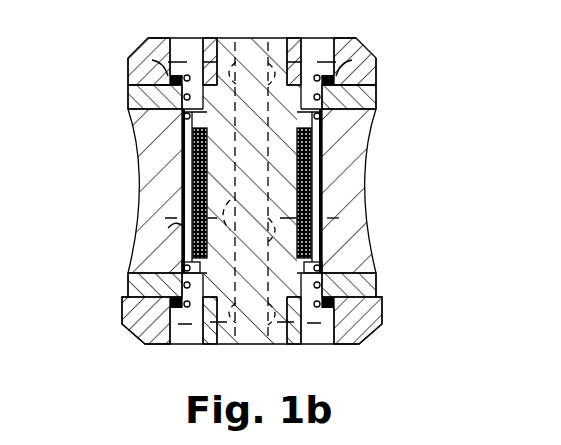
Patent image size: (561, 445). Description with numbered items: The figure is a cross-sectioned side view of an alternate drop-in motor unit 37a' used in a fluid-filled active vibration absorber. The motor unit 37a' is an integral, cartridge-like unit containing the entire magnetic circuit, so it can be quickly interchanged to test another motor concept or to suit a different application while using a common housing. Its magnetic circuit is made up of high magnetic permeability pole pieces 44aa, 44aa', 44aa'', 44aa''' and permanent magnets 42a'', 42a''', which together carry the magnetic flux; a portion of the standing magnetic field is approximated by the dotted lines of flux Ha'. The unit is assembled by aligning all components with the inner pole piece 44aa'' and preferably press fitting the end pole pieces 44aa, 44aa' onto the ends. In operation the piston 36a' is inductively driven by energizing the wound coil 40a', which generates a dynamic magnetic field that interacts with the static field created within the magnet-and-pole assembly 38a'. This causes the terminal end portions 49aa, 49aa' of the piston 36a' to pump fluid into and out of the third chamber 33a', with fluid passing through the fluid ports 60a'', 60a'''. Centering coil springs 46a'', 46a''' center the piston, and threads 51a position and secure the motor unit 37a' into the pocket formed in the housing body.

The drop-in motor unit 37a' is at (100, 48).
The fluid port 60a'' is at (201, 60).
The pole piece 44aa' is at (395, 64).
The centering coil spring 46a'' is at (127, 97).
The permanent magnet 42a'' is at (386, 99).
The terminal end portion 49aa is at (385, 187).
The piston 36a' is at (132, 191).
The magnet-and-pole assembly 38a' is at (127, 201).
The wound coil 40a' is at (125, 215).
The inner pole piece 44aa'' is at (252, 191).
The lines of flux Ha' is at (381, 191).
The pole piece 44aa''' is at (437, 201).
The terminal end portion 49aa' is at (383, 191).
The third chamber 33a' is at (408, 282).
The permanent magnet 42a''' is at (396, 213).
The pole piece 44aa is at (397, 330).
The fluid port 60a''' is at (361, 347).
The threads 51a is at (122, 300).
The centering coil spring 46a''' is at (126, 208).